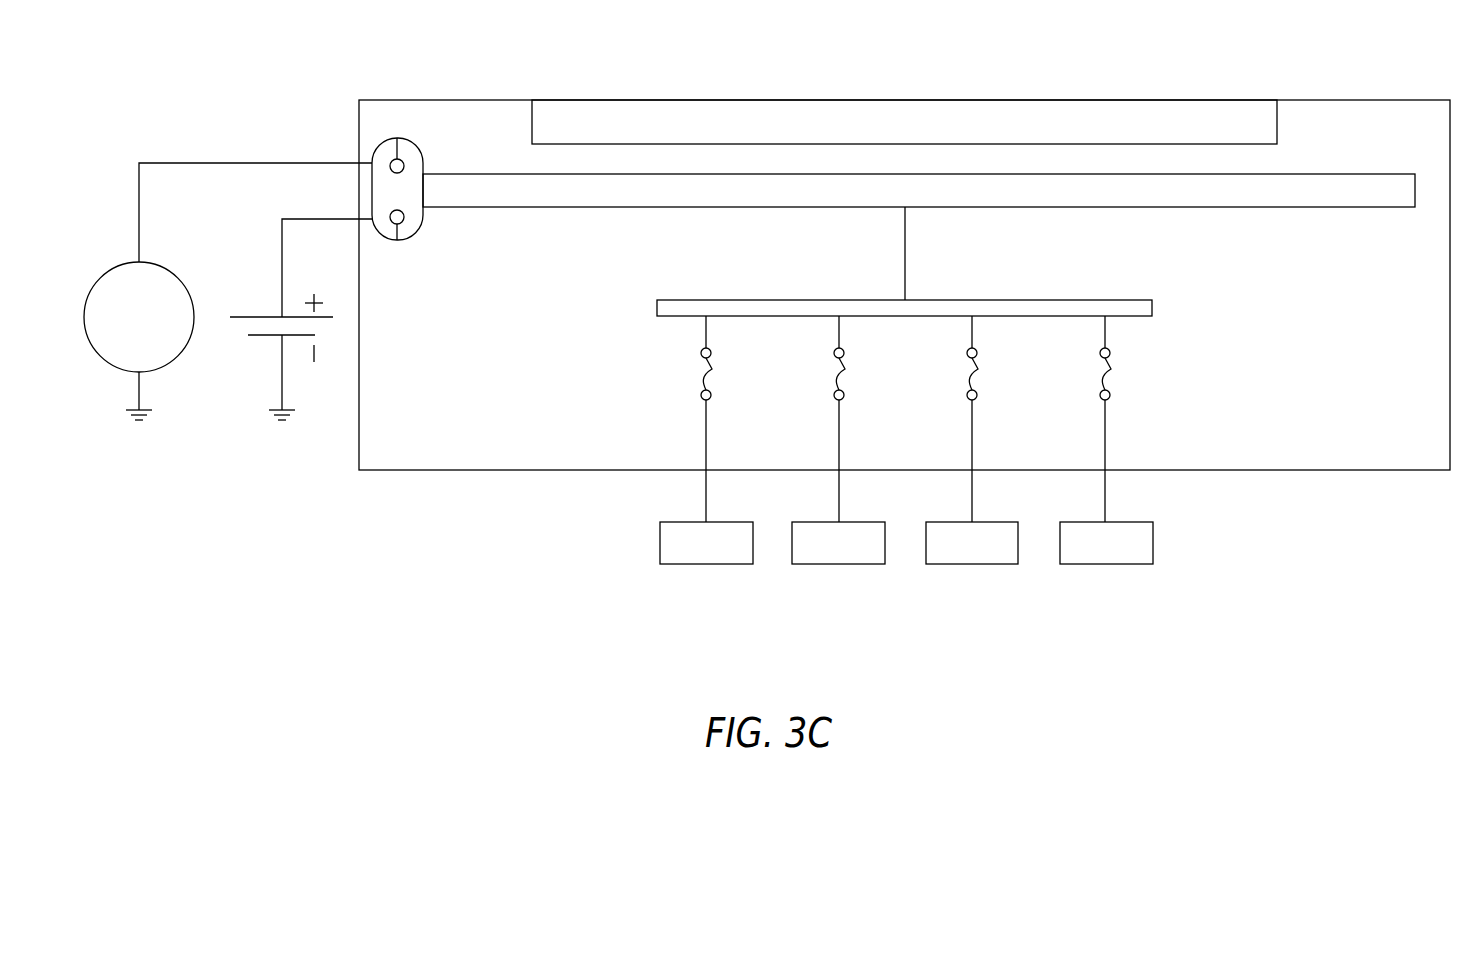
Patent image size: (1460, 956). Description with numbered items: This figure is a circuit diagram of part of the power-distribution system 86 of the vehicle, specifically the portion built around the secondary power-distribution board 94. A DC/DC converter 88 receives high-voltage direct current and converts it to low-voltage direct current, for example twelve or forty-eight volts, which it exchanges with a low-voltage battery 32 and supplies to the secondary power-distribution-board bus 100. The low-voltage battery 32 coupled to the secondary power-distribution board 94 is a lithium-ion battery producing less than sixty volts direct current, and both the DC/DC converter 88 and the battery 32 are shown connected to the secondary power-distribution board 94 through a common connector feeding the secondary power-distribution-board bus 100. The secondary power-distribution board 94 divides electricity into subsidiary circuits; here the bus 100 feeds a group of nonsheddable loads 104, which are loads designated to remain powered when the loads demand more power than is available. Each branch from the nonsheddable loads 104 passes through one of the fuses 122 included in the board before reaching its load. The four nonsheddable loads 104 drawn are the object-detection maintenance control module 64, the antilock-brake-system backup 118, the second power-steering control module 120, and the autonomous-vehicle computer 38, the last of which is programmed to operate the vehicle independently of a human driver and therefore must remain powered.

The power-distribution system 86 is at (945, 55).
The secondary power-distribution board 94 is at (1393, 100).
The secondary power-distribution-board bus 100 is at (1358, 174).
The nonsheddable loads 104 is at (1125, 300).
The DC/DC converter 88 is at (115, 268).
The low-voltage battery 32 is at (256, 337).
The fuse 122 is at (712, 369).
The object-detection maintenance control module 64 is at (680, 565).
The antilock-brake-system backup 118 is at (812, 565).
The second power-steering control module 120 is at (948, 565).
The autonomous-vehicle computer 38 is at (1081, 565).